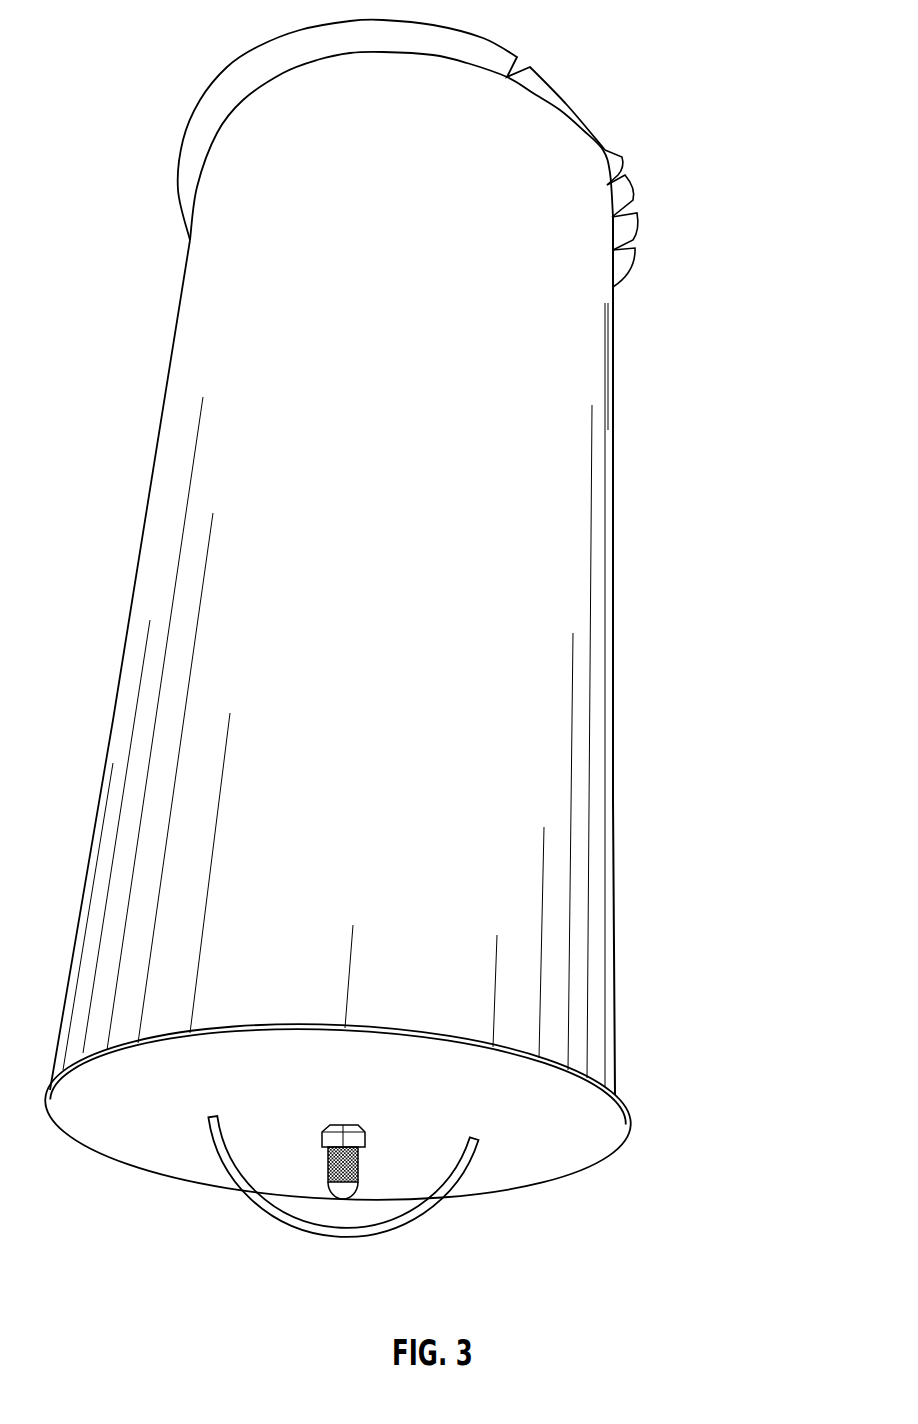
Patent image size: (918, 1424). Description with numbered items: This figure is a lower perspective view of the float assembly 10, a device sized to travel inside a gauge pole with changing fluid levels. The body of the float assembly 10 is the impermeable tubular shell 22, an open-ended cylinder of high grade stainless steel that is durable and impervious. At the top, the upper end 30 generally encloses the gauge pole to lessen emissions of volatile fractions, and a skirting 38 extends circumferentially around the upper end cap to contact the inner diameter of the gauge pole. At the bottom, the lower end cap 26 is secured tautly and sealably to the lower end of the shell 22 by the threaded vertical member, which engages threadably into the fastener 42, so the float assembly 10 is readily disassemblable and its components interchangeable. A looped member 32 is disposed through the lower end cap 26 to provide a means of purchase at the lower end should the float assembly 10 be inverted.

The float assembly 10 is at (750, 32).
The tubular shell 22 is at (383, 564).
The lower end cap 26 is at (90, 1142).
The upper end 30 is at (118, 110).
The looped member 32 is at (283, 1213).
The skirting 38 is at (605, 150).
The fastener 42 is at (365, 1135).